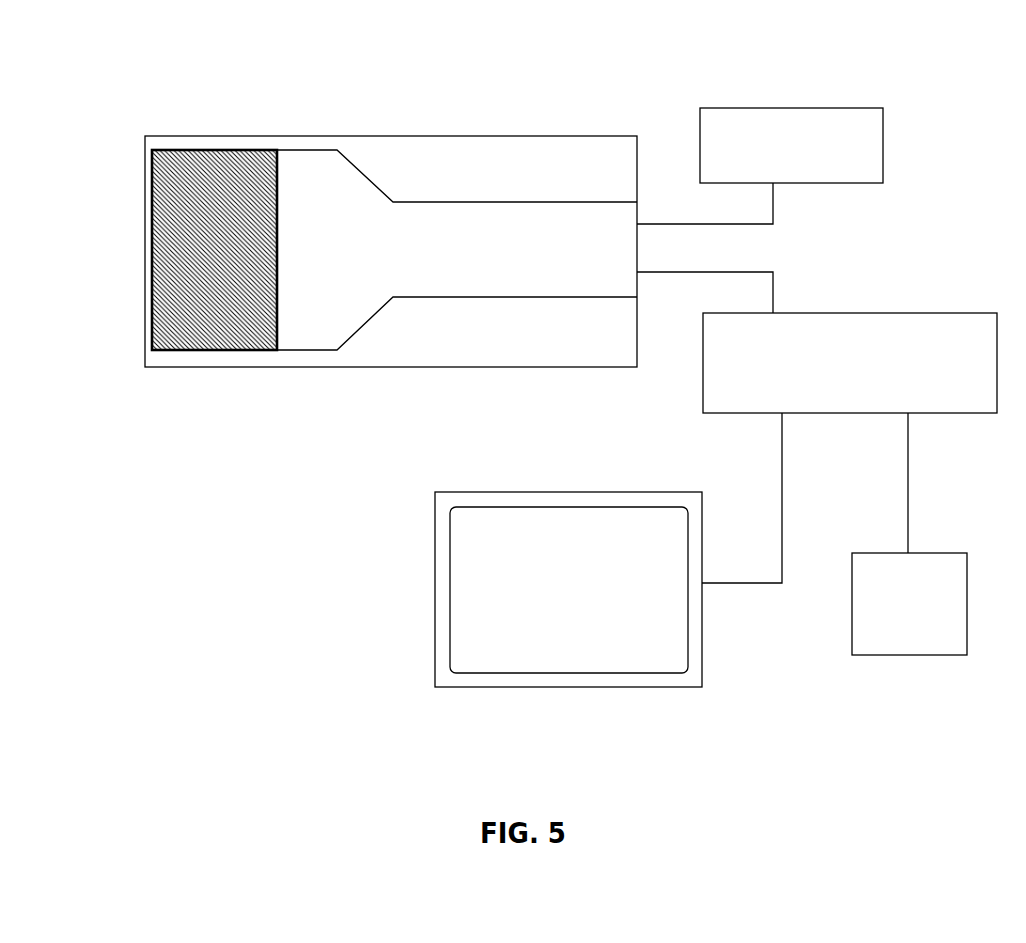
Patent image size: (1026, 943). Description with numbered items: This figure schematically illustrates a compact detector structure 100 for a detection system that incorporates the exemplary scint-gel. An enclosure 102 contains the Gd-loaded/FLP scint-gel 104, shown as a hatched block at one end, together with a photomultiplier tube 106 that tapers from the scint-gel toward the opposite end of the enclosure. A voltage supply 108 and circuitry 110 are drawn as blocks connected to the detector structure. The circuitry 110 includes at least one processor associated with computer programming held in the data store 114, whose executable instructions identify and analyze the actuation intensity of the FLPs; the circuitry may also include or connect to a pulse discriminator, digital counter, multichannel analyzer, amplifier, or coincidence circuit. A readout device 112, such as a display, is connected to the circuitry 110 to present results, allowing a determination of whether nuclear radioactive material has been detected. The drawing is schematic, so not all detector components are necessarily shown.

The detector structure 100 is at (135, 88).
The enclosure 102 is at (425, 136).
The Gd-loaded/FLP scint-gel 104 is at (225, 350).
The photomultiplier tube 106 is at (457, 268).
The voltage supply 108 is at (883, 141).
The circuitry 110 is at (908, 313).
The readout device 112 is at (435, 613).
The data store 114 is at (852, 611).